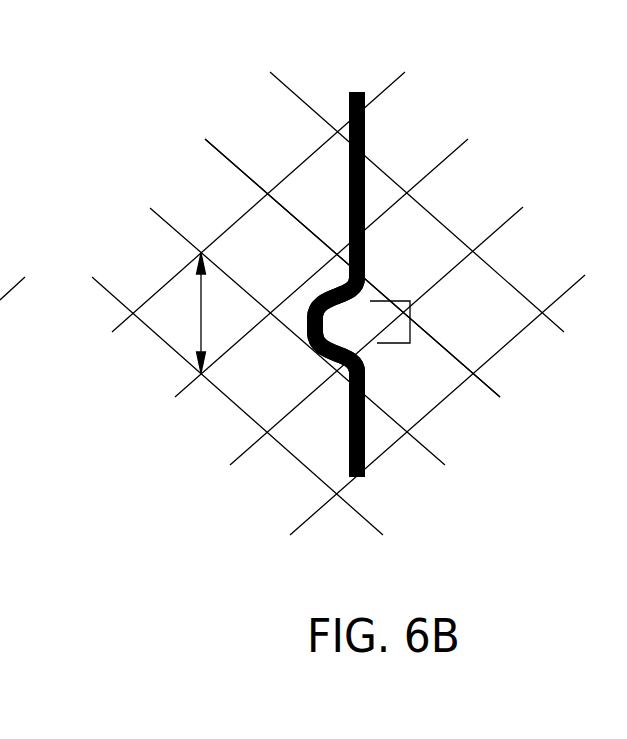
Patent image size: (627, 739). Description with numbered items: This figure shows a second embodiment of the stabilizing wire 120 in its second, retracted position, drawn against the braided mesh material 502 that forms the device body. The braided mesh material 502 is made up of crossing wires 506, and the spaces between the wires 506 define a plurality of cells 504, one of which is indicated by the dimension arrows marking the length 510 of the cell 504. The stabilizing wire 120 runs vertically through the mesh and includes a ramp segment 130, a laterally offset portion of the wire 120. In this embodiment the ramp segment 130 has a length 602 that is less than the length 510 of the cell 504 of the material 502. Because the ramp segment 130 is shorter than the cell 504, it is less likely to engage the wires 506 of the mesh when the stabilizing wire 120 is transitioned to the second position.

The stabilizing wire 120 is at (414, 115).
The ramp segment 130 is at (291, 371).
The braided mesh material 502 is at (86, 316).
The cell 504 is at (268, 248).
The wire 506 is at (225, 152).
The length of cell 510 is at (200, 314).
The length of ramp segment 602 is at (410, 327).